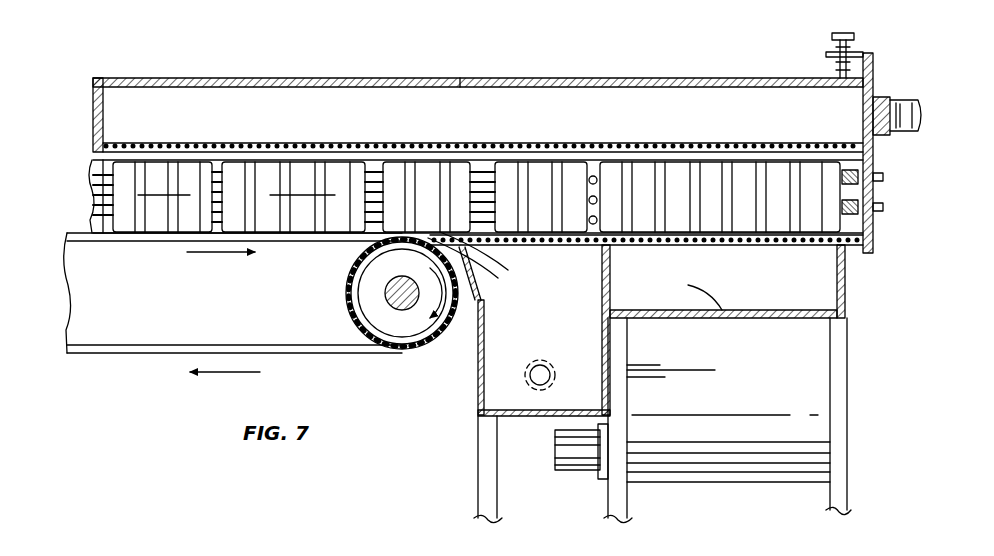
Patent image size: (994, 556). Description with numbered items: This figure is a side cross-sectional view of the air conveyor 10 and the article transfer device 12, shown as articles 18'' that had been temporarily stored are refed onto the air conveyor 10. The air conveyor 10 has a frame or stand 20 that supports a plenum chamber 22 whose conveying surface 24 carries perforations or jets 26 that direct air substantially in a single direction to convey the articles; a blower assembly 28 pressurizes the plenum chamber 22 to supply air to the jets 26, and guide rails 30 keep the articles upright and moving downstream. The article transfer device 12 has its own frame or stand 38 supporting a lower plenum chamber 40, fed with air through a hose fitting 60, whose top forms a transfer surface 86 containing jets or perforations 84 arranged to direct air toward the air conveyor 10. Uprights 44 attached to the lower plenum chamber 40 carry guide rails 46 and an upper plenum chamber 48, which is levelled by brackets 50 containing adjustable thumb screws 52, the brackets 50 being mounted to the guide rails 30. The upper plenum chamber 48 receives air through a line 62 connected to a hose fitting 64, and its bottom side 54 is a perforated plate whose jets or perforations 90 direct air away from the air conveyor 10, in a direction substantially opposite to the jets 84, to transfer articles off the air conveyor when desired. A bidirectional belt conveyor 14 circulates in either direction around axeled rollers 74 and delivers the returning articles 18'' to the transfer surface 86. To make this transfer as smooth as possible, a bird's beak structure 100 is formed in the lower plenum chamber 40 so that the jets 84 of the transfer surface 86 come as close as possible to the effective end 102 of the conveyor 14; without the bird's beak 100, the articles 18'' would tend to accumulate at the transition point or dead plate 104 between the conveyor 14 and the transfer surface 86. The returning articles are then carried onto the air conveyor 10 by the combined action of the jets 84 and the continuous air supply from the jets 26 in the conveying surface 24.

The air conveyor 10 is at (846, 290).
The article transfer device 12 is at (455, 80).
The conveyor 14 is at (130, 355).
The articles 18'' is at (498, 164).
The frame or stand 20 is at (628, 498).
The plenum chamber 22 is at (840, 318).
The conveying surface 24 is at (655, 247).
The perforations or jets 26 is at (788, 247).
The blower assembly 28 is at (758, 445).
The guide rails 30 is at (852, 248).
The frame or stand 38 is at (478, 473).
The lower plenum chamber 40 is at (492, 372).
The uprights 44 is at (575, 160).
The guide rails 46 is at (112, 210).
The upper plenum chamber 48 is at (392, 82).
The brackets 50 is at (869, 62).
The adjustable thumb screws 52 is at (840, 33).
The bottom side 54 is at (150, 158).
The hose fitting 60 is at (546, 362).
The line 62 is at (910, 120).
The hose fitting 64 is at (880, 98).
The axeled rollers 74 is at (392, 322).
The jets or perforations 84 is at (528, 216).
The transfer surface 86 is at (583, 160).
The jets or perforations 90 is at (365, 152).
The bird's beak structure 100 is at (498, 278).
The effective end 102 is at (395, 252).
The transition point or dead plate 104 is at (392, 232).